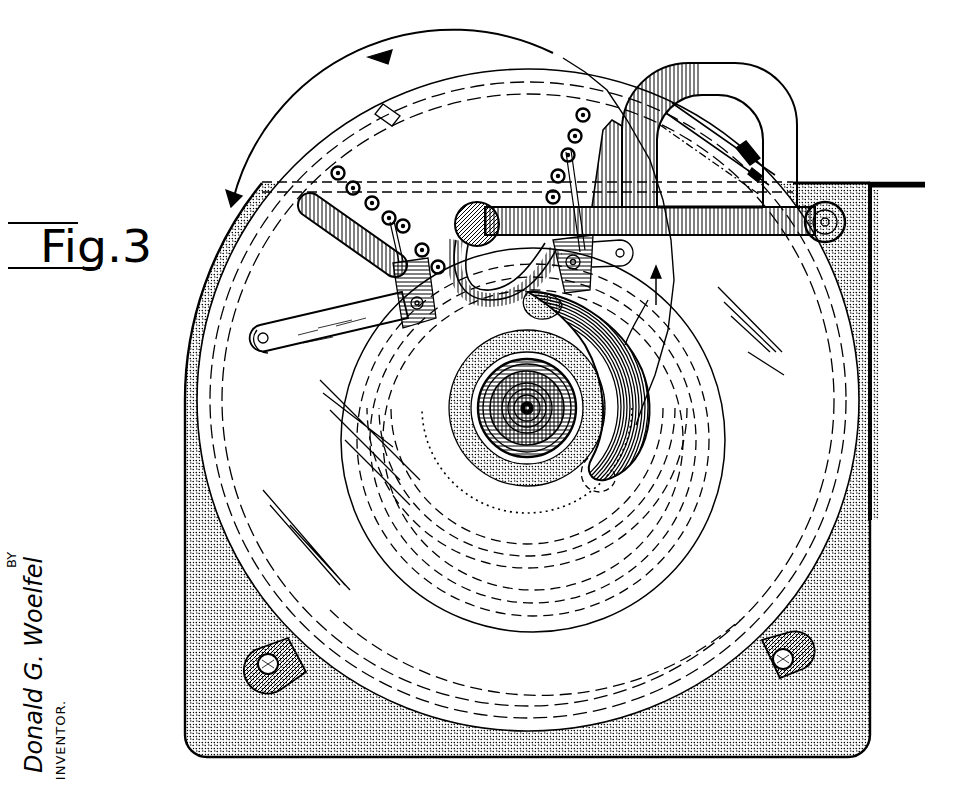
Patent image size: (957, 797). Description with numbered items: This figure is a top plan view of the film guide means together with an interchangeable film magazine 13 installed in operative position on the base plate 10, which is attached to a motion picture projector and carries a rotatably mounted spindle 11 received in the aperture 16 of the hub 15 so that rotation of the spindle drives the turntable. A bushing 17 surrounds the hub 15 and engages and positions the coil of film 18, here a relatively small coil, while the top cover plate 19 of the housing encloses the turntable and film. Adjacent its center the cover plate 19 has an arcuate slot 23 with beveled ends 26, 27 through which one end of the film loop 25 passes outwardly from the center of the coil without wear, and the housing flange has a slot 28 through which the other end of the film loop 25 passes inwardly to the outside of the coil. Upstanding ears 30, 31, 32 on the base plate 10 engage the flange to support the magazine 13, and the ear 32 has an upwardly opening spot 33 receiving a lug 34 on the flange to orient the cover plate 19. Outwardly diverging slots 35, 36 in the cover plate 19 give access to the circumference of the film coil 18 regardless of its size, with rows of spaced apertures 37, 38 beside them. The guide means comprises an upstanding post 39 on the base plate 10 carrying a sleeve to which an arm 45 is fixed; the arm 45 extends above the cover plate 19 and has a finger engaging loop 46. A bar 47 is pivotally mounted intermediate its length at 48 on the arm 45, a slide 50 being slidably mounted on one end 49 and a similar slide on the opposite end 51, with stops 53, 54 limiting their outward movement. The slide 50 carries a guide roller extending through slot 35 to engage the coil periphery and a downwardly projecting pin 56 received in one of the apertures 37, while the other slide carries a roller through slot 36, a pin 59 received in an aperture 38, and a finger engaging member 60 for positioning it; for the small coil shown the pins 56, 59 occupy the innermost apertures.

The base plate 10 is at (872, 710).
The spindle 11 is at (498, 430).
The film magazine 13 is at (838, 539).
The hub 15 is at (505, 462).
The aperture 16 is at (512, 408).
The bushing 17 is at (543, 470).
The coil of film 18 is at (640, 420).
The top cover plate 19 is at (762, 486).
The arcuate slot 23 is at (632, 362).
The film loop 25 is at (364, 70).
The beveled end 26 is at (592, 482).
The beveled end 27 is at (528, 312).
The slot 28 is at (385, 112).
The upstanding ear 30 is at (250, 648).
The upstanding ear 31 is at (800, 648).
The upstanding ear 32 is at (770, 172).
The upwardly opening spot 33 is at (762, 152).
The lug 34 is at (744, 135).
The slot 35 is at (572, 130).
The slot 36 is at (342, 243).
The row of spaced apertures 37 is at (552, 153).
The row of spaced apertures 38 is at (380, 200).
The upstanding post 39 is at (848, 223).
The arm 45 is at (738, 238).
The finger engaging loop 46 is at (770, 85).
The bar 47 is at (299, 319).
The pivot 48 is at (472, 204).
The end of bar 49 is at (670, 296).
The slide 50 is at (650, 315).
The end of bar 51 is at (300, 358).
The stop 53 is at (640, 258).
The stop 54 is at (263, 332).
The pin 56 is at (540, 240).
The pin 59 is at (424, 249).
The finger engaging member 60 is at (409, 223).